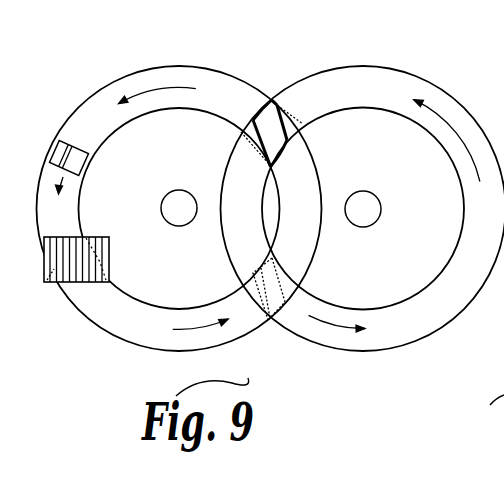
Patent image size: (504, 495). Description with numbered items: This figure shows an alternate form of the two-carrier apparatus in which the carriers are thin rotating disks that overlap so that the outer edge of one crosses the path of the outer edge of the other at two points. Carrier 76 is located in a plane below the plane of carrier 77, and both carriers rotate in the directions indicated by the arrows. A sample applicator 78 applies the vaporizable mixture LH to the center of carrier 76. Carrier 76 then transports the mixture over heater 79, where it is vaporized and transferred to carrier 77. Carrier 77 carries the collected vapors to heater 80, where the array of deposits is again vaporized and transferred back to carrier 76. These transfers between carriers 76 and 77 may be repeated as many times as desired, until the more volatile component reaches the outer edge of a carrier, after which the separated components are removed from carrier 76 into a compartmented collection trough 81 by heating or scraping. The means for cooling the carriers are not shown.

The carrier 76 is at (208, 67).
The carrier 77 is at (358, 68).
The sample applicator 78 is at (62, 140).
The heater 79 is at (258, 312).
The heater 80 is at (275, 99).
The compartmented collection trough 81 is at (108, 256).